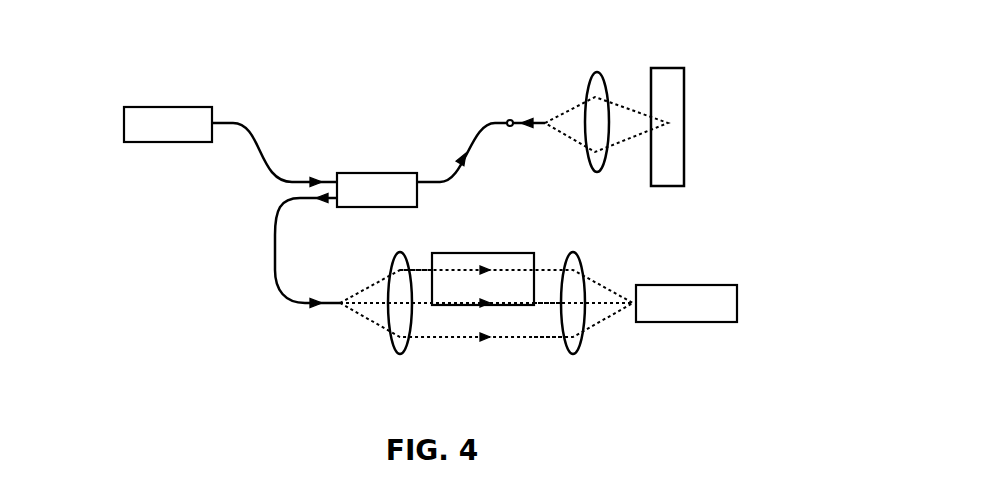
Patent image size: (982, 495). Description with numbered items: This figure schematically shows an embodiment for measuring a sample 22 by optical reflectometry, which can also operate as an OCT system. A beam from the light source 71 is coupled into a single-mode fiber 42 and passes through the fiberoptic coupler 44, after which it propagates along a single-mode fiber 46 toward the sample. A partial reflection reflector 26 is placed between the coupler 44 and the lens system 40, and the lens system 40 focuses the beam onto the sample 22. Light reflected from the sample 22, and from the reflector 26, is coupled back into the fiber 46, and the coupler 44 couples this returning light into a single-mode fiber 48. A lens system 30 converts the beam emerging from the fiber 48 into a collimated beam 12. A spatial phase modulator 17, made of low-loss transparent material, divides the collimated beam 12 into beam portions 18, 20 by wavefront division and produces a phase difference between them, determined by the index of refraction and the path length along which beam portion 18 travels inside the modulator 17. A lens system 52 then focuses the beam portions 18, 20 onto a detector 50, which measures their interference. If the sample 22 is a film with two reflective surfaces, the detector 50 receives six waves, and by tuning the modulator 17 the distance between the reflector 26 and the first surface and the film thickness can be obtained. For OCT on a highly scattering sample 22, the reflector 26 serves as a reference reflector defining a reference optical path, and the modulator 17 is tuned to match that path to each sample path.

The light source 71 is at (118, 122).
The single-mode fiber 42 is at (228, 105).
The fiberoptic coupler 44 is at (370, 168).
The single-mode fiber 46 is at (445, 153).
The reference reflector 26 is at (510, 102).
The lens system 40 is at (602, 188).
The sample 22 is at (664, 57).
The single-mode fiber 48 is at (252, 245).
The lens system 30 is at (400, 370).
The spatial phase modulator 17 is at (495, 248).
The collimated beam 12 is at (422, 296).
The beam portion 18 is at (547, 287).
The beam portion 20 is at (543, 318).
The lens system 52 is at (573, 368).
The detector 50 is at (707, 272).